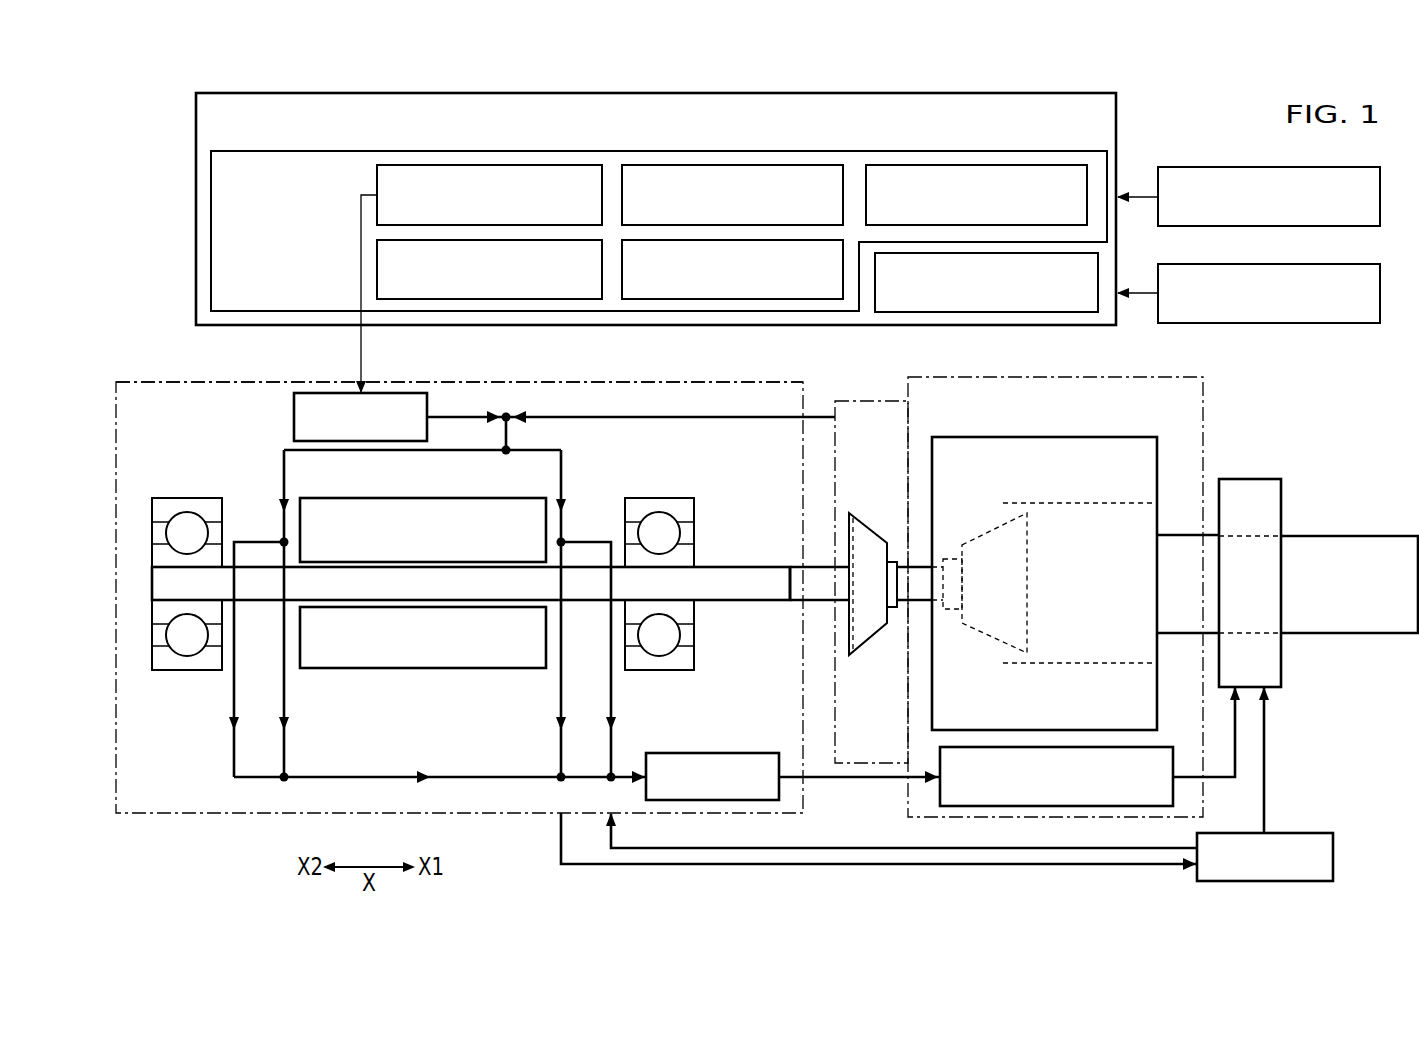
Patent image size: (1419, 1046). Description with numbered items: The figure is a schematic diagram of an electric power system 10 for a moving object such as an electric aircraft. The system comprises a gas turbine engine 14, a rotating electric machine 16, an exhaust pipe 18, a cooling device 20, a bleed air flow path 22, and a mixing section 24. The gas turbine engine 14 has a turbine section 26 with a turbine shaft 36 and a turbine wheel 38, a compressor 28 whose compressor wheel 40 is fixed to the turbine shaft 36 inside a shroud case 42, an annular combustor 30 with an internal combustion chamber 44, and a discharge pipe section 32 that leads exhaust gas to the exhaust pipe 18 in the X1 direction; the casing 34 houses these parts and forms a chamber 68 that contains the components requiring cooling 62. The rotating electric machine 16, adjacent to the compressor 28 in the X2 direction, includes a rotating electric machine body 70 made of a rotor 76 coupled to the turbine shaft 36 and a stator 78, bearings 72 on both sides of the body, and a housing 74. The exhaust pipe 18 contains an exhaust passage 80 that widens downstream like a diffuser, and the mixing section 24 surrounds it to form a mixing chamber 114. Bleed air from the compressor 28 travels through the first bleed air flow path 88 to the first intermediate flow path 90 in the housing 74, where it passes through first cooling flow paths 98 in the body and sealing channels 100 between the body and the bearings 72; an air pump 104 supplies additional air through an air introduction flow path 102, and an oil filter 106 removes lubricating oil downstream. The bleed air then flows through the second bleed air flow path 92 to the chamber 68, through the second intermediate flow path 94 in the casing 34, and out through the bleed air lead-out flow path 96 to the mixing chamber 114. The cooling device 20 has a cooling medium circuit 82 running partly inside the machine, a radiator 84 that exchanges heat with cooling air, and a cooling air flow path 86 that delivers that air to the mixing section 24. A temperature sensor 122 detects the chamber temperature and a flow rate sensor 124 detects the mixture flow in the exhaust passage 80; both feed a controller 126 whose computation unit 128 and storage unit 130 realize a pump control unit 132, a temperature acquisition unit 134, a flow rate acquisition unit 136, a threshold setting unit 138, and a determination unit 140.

The electric power system 10 is at (1216, 128).
The gas turbine engine 14 is at (1222, 384).
The rotating electric machine 16 is at (147, 372).
The exhaust pipe 18 is at (1378, 536).
The cooling device 20 is at (1212, 893).
The bleed air flow path 22 is at (653, 406).
The mixing section 24 is at (1240, 487).
The turbine section 26 is at (980, 514).
The compressor 28 is at (861, 386).
The combustor 30 is at (1088, 437).
The discharge pipe section 32 is at (1174, 545).
The casing 34 is at (1148, 377).
The turbine shaft 36 is at (922, 593).
The turbine wheel 38 is at (988, 636).
The compressor wheel 40 is at (867, 543).
The shroud case 42 is at (886, 401).
The combustion chamber 44 is at (1052, 447).
The components requiring cooling 62 is at (1060, 807).
The chamber 68 is at (928, 805).
The rotating electric machine body 70 is at (381, 704).
The bearings 72 is at (161, 664).
The housing 74 is at (172, 382).
The rotor 76 is at (485, 588).
The stator 78 is at (453, 662).
The exhaust passage 80 is at (1380, 615).
The cooling medium circuit 82 is at (778, 850).
The radiator 84 is at (1299, 833).
The cooling air flow path 86 is at (1266, 745).
The first bleed air flow path 88 is at (818, 416).
The first intermediate flow path 90 is at (571, 406).
The second bleed air flow path 92 is at (835, 780).
The second intermediate flow path 94 is at (923, 777).
The bleed air lead-out flow path 96 is at (1225, 780).
The first cooling flow paths 98 is at (284, 685).
The sealing channels 100 is at (234, 686).
The air introduction flow path 102 is at (455, 415).
The air pump 104 is at (294, 416).
The oil filter 106 is at (743, 752).
The mixing chamber 114 is at (1263, 501).
The temperature sensor 122 is at (1320, 167).
The flow rate sensor 124 is at (1320, 264).
The controller 126 is at (196, 122).
The computation unit 128 is at (211, 223).
The storage unit 130 is at (1025, 312).
The pump control unit 132 is at (563, 165).
The temperature acquisition unit 134 is at (790, 165).
The flow rate acquisition unit 136 is at (751, 300).
The threshold setting unit 138 is at (1038, 165).
The determination unit 140 is at (525, 300).